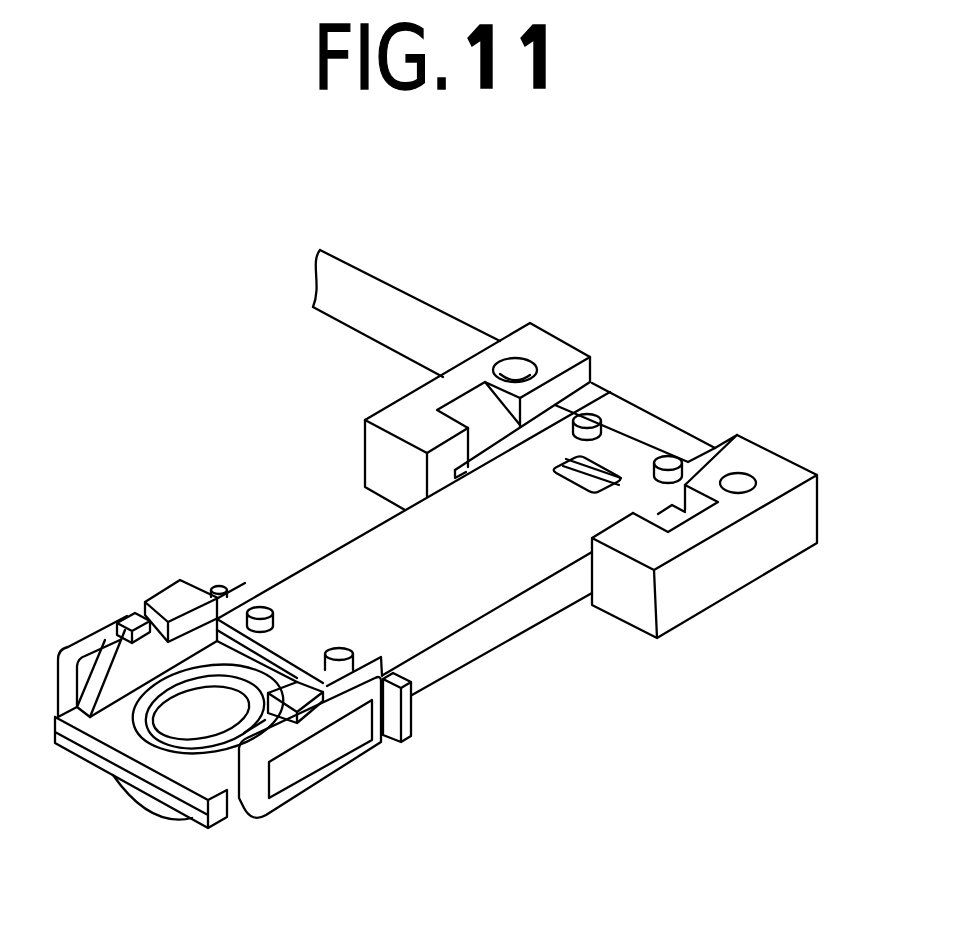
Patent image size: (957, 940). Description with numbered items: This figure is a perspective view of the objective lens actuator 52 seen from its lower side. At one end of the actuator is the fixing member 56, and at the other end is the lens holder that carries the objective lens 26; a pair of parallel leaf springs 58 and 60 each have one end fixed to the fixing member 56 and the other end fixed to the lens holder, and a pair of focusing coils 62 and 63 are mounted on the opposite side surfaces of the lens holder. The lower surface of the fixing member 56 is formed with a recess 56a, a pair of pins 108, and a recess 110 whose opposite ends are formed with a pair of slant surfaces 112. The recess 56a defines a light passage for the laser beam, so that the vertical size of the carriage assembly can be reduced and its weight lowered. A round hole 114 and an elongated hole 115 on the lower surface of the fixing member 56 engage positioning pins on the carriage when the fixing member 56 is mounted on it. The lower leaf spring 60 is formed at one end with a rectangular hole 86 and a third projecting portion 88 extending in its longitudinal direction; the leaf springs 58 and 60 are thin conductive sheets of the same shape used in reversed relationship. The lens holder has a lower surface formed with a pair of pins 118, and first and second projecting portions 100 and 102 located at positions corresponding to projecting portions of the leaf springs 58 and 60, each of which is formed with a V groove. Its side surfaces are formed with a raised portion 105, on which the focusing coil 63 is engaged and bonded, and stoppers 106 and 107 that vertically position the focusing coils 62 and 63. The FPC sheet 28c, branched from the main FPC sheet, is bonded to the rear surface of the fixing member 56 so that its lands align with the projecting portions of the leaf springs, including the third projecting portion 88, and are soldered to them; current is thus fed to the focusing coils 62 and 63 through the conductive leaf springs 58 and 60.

The objective lens 26 is at (163, 805).
The FPC sheet 28c is at (368, 278).
The objective lens actuator 52 is at (620, 331).
The fixing member 56 is at (703, 600).
The recess 56a is at (670, 434).
The leaf spring 58 is at (498, 628).
The leaf spring 60 is at (343, 549).
The focusing coil 62 is at (88, 642).
The focusing coil 63 is at (324, 773).
The rectangular hole 86 is at (572, 478).
The third projecting portion 88 is at (738, 441).
The first projecting portion 100 is at (218, 587).
The second projecting portion 102 is at (412, 722).
The raised portion 105 is at (293, 762).
The stopper 106 is at (140, 612).
The stopper 107 is at (294, 688).
The pins 108 is at (592, 421).
The recess 110 is at (590, 481).
The slant surfaces 112 is at (467, 410).
The round hole 114 is at (747, 480).
The elongated hole 115 is at (513, 360).
The pins 118 is at (259, 612).